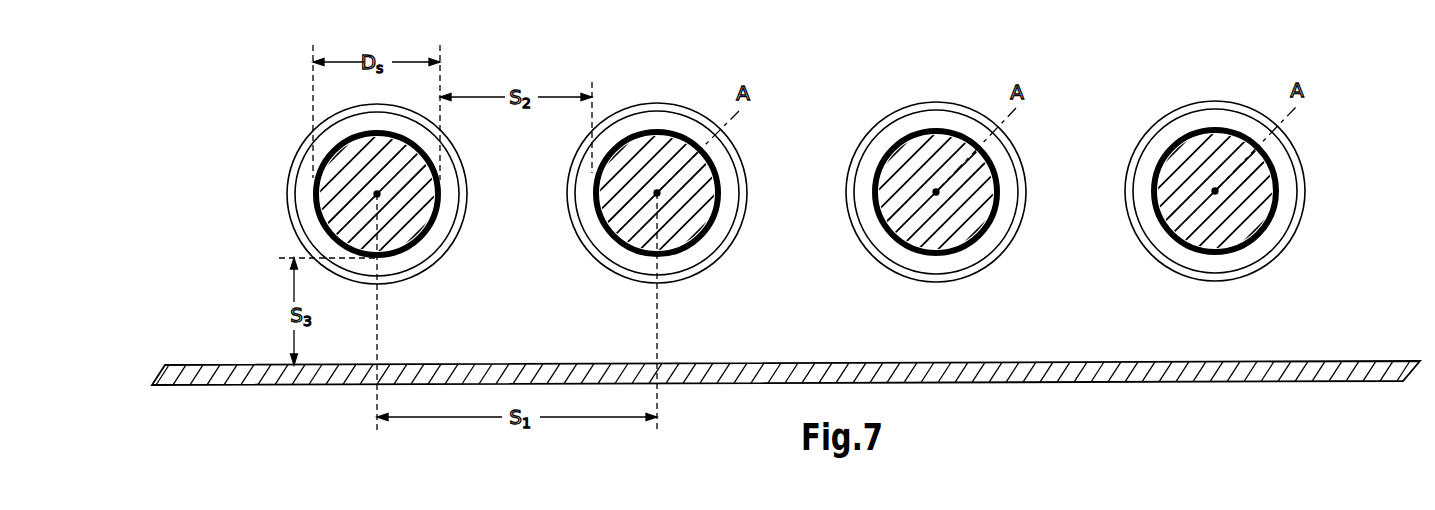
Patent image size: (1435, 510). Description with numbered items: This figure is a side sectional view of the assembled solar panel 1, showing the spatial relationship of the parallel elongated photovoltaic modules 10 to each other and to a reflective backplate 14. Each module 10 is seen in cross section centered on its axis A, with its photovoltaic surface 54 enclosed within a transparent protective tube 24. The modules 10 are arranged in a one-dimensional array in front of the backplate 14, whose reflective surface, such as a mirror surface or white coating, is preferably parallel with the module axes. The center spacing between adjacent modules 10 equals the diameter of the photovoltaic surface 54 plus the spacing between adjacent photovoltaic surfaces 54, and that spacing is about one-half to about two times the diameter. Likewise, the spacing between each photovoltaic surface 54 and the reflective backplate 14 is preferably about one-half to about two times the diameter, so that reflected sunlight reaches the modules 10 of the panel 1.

The solar panel 1 is at (1217, 50).
The photovoltaic module 10 is at (288, 212).
The backplate 14 is at (1288, 362).
The transparent protective tube 24 is at (311, 146).
The photovoltaic surface 54 is at (315, 177).